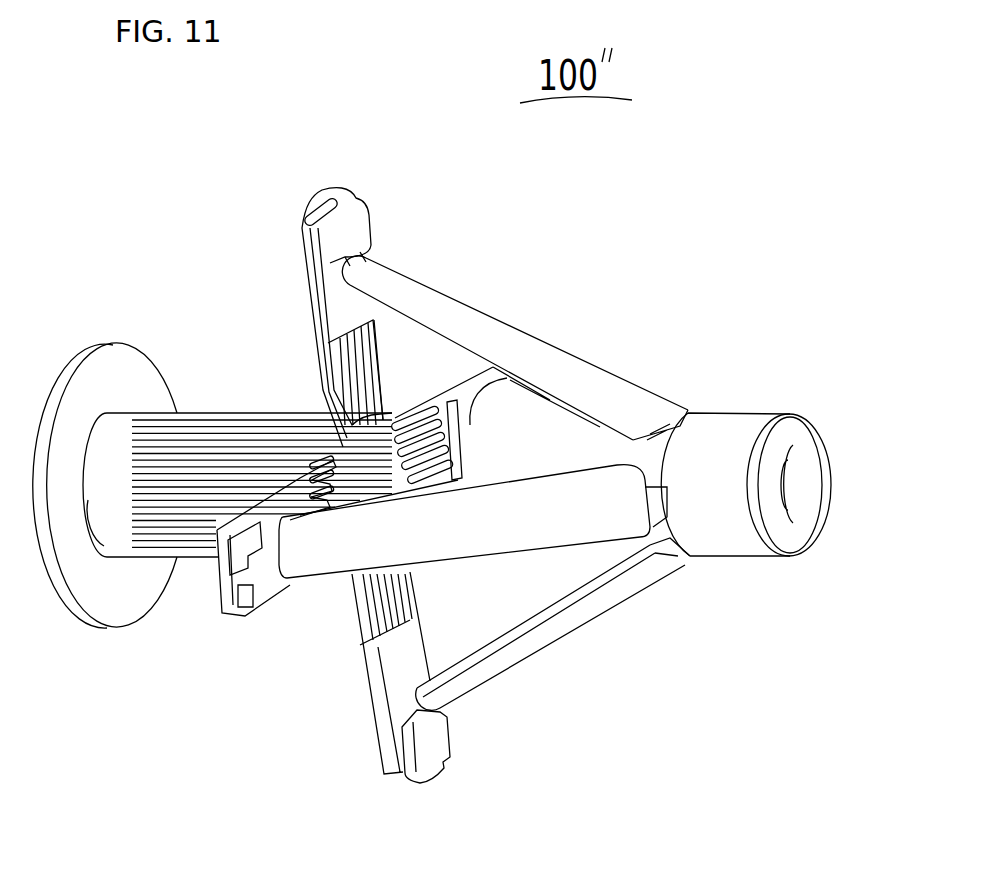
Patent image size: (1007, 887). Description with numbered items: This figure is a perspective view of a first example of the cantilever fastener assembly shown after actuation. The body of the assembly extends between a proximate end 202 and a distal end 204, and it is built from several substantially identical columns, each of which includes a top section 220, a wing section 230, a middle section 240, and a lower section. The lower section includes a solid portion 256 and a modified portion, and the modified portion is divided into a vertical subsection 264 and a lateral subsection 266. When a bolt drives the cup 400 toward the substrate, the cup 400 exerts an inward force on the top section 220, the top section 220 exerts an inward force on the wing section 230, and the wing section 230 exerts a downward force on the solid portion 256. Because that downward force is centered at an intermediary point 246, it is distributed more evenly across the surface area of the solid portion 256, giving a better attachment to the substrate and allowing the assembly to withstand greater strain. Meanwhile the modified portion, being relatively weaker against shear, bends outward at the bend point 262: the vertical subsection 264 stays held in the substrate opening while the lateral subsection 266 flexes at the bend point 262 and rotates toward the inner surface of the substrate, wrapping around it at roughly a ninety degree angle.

The proximate end 202 is at (748, 433).
The distal end 204 is at (105, 548).
The top section 220 is at (727, 542).
The wing section 230 is at (546, 353).
The middle section 240 is at (365, 218).
The intermediary point 246 is at (302, 292).
The solid portion 256 is at (302, 240).
The bend point 262 is at (393, 420).
The vertical subsection 264 is at (197, 555).
The lateral subsection 266 is at (323, 372).
The cup 400 is at (797, 423).